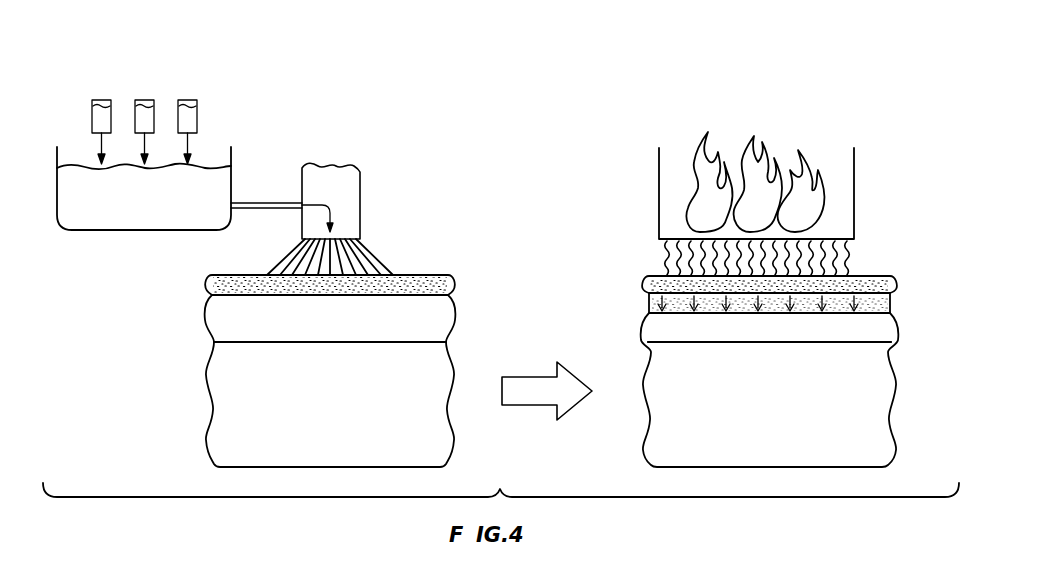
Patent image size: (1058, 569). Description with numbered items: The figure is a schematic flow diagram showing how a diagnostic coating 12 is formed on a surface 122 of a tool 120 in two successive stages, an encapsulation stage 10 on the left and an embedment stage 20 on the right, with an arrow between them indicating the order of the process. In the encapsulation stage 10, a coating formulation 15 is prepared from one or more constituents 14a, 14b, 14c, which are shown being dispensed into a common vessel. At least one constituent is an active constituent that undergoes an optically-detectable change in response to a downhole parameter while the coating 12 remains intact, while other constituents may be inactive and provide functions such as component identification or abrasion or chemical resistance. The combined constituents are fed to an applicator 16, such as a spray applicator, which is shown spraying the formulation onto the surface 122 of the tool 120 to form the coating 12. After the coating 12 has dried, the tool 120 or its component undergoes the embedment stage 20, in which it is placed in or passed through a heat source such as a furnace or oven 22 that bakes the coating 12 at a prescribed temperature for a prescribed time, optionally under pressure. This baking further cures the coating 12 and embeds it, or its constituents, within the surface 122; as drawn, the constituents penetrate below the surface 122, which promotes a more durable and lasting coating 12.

The encapsulation stage 10 is at (430, 168).
The diagnostic coating 12 is at (423, 275).
The constituent 14a is at (102, 107).
The constituent 14b is at (143, 107).
The constituent 14c is at (185, 105).
The coating formulation 15 is at (212, 184).
The applicator 16 is at (360, 200).
The embedment stage 20 is at (885, 133).
The furnace or oven 22 is at (855, 195).
The tool 120 is at (435, 312).
The surface 122 is at (455, 286).